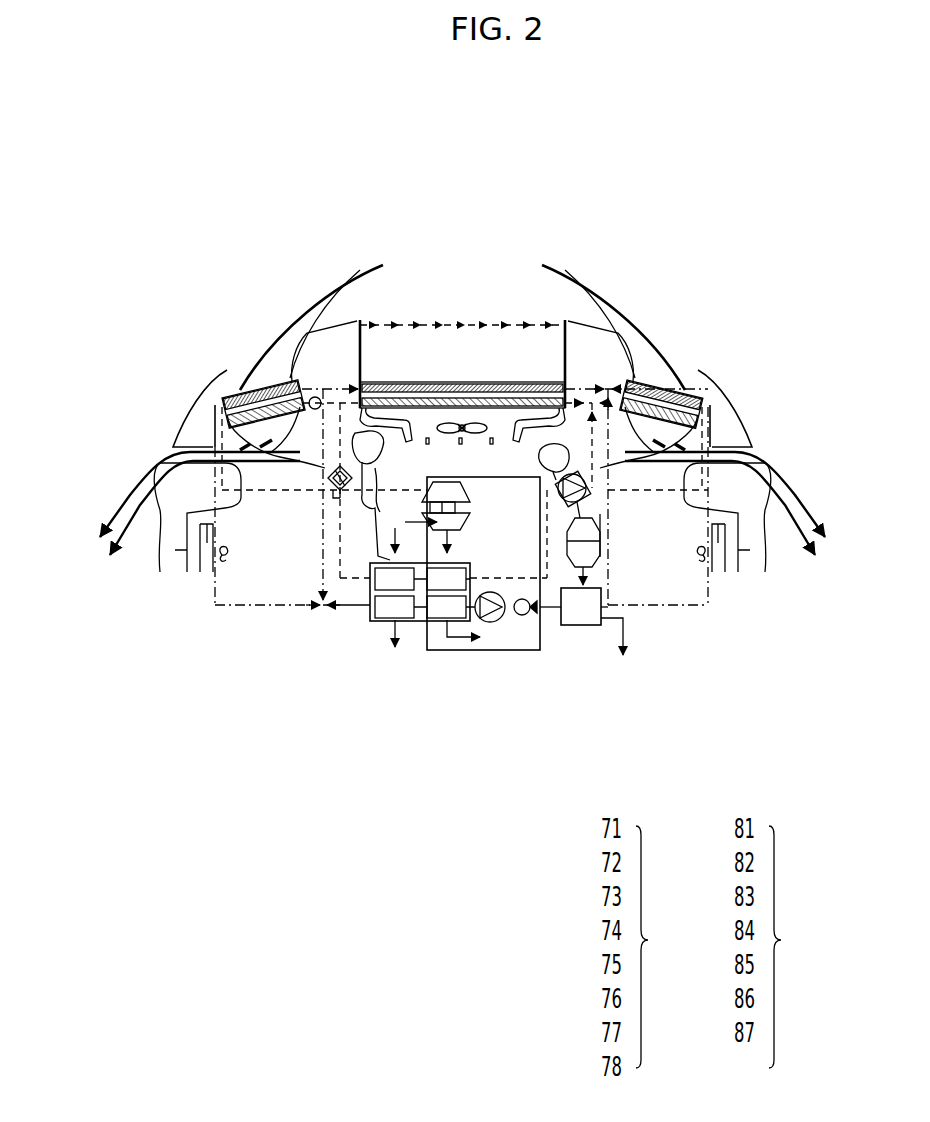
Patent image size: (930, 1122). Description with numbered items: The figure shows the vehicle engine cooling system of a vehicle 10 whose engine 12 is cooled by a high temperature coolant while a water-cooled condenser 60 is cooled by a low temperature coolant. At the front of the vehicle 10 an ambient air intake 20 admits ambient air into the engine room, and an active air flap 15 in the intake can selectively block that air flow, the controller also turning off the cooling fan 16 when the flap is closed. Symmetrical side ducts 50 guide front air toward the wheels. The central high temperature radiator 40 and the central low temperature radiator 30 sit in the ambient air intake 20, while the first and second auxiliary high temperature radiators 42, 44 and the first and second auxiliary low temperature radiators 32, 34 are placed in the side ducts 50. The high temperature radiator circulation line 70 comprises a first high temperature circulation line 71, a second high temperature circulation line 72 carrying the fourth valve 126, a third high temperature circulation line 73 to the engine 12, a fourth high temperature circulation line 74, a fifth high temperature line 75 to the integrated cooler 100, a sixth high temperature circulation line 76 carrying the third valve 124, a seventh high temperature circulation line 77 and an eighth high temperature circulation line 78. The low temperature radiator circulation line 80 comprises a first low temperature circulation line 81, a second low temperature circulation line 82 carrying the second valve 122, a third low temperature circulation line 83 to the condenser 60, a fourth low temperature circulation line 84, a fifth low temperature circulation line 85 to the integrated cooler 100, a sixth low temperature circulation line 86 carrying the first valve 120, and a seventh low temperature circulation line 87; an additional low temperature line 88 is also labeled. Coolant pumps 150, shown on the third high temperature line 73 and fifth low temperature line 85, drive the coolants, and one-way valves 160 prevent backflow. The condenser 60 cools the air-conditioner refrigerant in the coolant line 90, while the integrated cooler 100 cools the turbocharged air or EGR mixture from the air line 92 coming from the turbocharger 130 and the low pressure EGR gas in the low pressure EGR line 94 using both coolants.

The vehicle 10 is at (752, 410).
The engine 12 is at (507, 652).
The active air flap 15 is at (402, 319).
The cooling fan 16 is at (462, 420).
The ambient air intake 20 is at (566, 316).
The central low temperature radiator 30 is at (492, 392).
The first auxiliary low temperature radiator 32 is at (270, 387).
The second auxiliary low temperature radiator 34 is at (694, 386).
The central high temperature radiator 40 is at (404, 384).
The first auxiliary high temperature radiator 42 is at (283, 393).
The second auxiliary high temperature radiator 44 is at (706, 398).
The side duct 50 is at (232, 367).
The water-cooled condenser 60 is at (588, 628).
The high temperature radiator circulation line 70 is at (655, 947).
The first high temperature circulation line 71 is at (350, 402).
The second high temperature circulation line 72 is at (657, 390).
The third high temperature circulation line 73 is at (655, 491).
The fourth high temperature circulation line 74 is at (590, 435).
The fifth high temperature line 75 is at (520, 578).
The sixth high temperature circulation line 76 is at (378, 437).
The seventh high temperature circulation line 77 is at (340, 560).
The eighth high temperature circulation line 78 is at (248, 492).
The low temperature radiator circulation line 80 is at (789, 947).
The first low temperature circulation line 81 is at (335, 390).
The second low temperature circulation line 82 is at (607, 400).
The third low temperature circulation line 83 is at (705, 608).
The fourth low temperature circulation line 84 is at (610, 575).
The fifth low temperature circulation line 85 is at (552, 609).
The sixth low temperature circulation line 86 is at (342, 596).
The seventh low temperature circulation line 87 is at (220, 608).
The eighth actuator 88 is at (744, 1066).
The coolant line 90 is at (602, 540).
The air line 92 is at (448, 540).
The low pressure EGR line 94 is at (392, 546).
The integrated cooler 100 is at (408, 623).
The first valve 120 is at (325, 617).
The second valve 122 is at (627, 390).
The third valve 124 is at (326, 494).
The fourth valve 126 is at (593, 388).
The turbocharger 130 is at (475, 492).
The coolant pump 150 is at (558, 481).
The one-way valve 160 is at (310, 409).